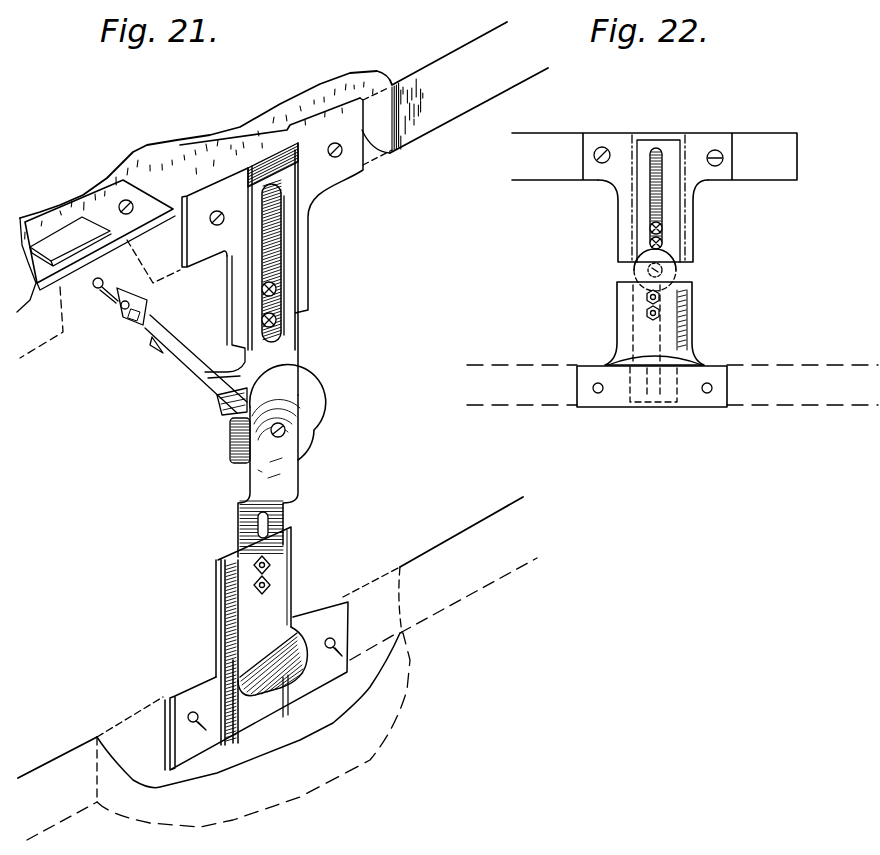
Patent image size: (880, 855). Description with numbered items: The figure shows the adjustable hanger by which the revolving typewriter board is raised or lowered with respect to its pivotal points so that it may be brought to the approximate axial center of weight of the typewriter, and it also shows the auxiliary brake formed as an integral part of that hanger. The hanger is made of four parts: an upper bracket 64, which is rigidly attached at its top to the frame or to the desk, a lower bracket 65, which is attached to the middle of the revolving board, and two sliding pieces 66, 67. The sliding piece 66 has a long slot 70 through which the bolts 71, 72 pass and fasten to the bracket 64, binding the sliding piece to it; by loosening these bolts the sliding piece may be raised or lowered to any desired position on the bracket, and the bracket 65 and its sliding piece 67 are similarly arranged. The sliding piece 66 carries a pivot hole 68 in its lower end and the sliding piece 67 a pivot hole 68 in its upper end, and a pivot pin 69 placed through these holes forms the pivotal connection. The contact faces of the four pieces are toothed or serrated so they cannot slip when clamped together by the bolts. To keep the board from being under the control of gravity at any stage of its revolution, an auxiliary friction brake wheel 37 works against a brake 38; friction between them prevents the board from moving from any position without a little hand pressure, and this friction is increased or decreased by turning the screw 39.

In FIG. 21, the auxiliary friction brake wheel 37 is at (243, 452).
In FIG. 21, the brake 38 is at (233, 420).
In FIG. 21, the screw 39 is at (101, 298).
In FIG. 21, the bracket 64 is at (305, 243).
In FIG. 22, the bracket 64 is at (694, 223).
In FIG. 21, the bracket 65 is at (280, 590).
In FIG. 22, the bracket 65 is at (693, 333).
In FIG. 21, the sliding piece 66 is at (248, 274).
In FIG. 22, the sliding piece 66 is at (644, 216).
In FIG. 21, the sliding piece 67 is at (243, 523).
In FIG. 22, the sliding piece 67 is at (639, 306).
In FIG. 21, the pivot hole 68 is at (286, 433).
In FIG. 22, the pivot hole 68 is at (649, 270).
In FIG. 21, the pivot pin 69 is at (284, 426).
In FIG. 22, the pivot pin 69 is at (664, 270).
In FIG. 21, the long slot 70 is at (282, 213).
In FIG. 22, the long slot 70 is at (658, 152).
In FIG. 21, the bolt 71 is at (277, 290).
In FIG. 22, the bolt 71 is at (662, 232).
In FIG. 21, the bolt 72 is at (277, 322).
In FIG. 22, the bolt 72 is at (662, 247).